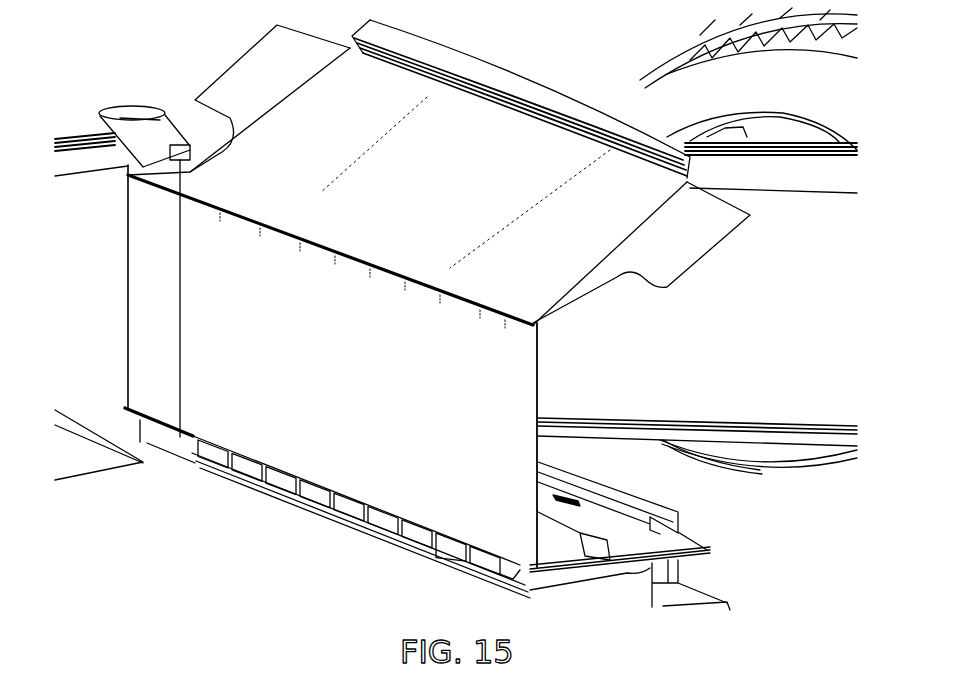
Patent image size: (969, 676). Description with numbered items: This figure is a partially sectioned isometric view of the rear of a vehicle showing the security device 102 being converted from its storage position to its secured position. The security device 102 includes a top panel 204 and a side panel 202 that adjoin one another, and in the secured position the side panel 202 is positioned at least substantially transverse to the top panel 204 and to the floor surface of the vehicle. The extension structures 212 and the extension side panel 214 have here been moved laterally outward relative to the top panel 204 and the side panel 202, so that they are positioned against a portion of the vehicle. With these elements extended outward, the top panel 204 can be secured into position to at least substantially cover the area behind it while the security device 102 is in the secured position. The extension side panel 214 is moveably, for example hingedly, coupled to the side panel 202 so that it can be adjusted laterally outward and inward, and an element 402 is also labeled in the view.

The security device 102 is at (523, 78).
The side panel 202 is at (363, 387).
The top panel 204 is at (457, 201).
The extension structures 212 is at (233, 62).
The extension side panel 214 is at (140, 290).
The tab 402 is at (710, 252).